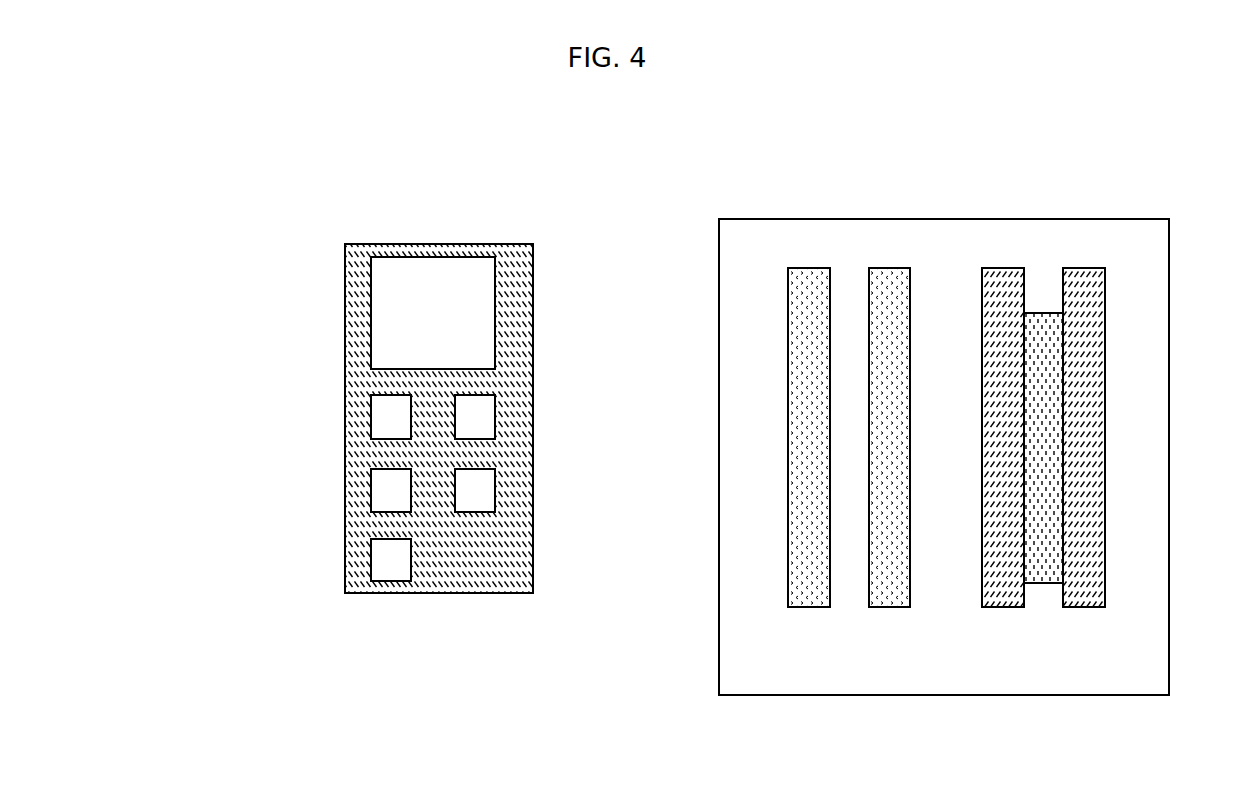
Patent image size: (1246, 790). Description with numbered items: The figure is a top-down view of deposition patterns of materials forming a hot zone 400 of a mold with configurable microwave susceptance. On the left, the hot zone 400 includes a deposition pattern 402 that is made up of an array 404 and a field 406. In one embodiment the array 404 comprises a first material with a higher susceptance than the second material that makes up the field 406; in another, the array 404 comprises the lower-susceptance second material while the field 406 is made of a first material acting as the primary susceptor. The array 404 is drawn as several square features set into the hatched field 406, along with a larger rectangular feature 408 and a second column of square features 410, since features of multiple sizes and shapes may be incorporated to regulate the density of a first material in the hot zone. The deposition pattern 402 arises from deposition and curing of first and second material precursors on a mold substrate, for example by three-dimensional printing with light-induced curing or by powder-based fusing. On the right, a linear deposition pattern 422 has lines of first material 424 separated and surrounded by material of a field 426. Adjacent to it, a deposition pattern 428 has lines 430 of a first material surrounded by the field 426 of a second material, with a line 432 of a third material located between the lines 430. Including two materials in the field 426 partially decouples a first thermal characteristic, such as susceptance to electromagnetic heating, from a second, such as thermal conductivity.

The hot zone 400 is at (281, 144).
The deposition pattern 402 is at (401, 463).
The array 404 is at (370, 555).
The field 406 is at (448, 565).
The conductive region 408 is at (411, 331).
The conductive contacts 410 is at (500, 416).
The deposition pattern 422 is at (851, 423).
The lines of first material 424 is at (809, 268).
The field 426 is at (733, 436).
The deposition pattern 428 is at (1061, 423).
The lines of a first material 430 is at (1003, 268).
The line of a third material 432 is at (1045, 443).